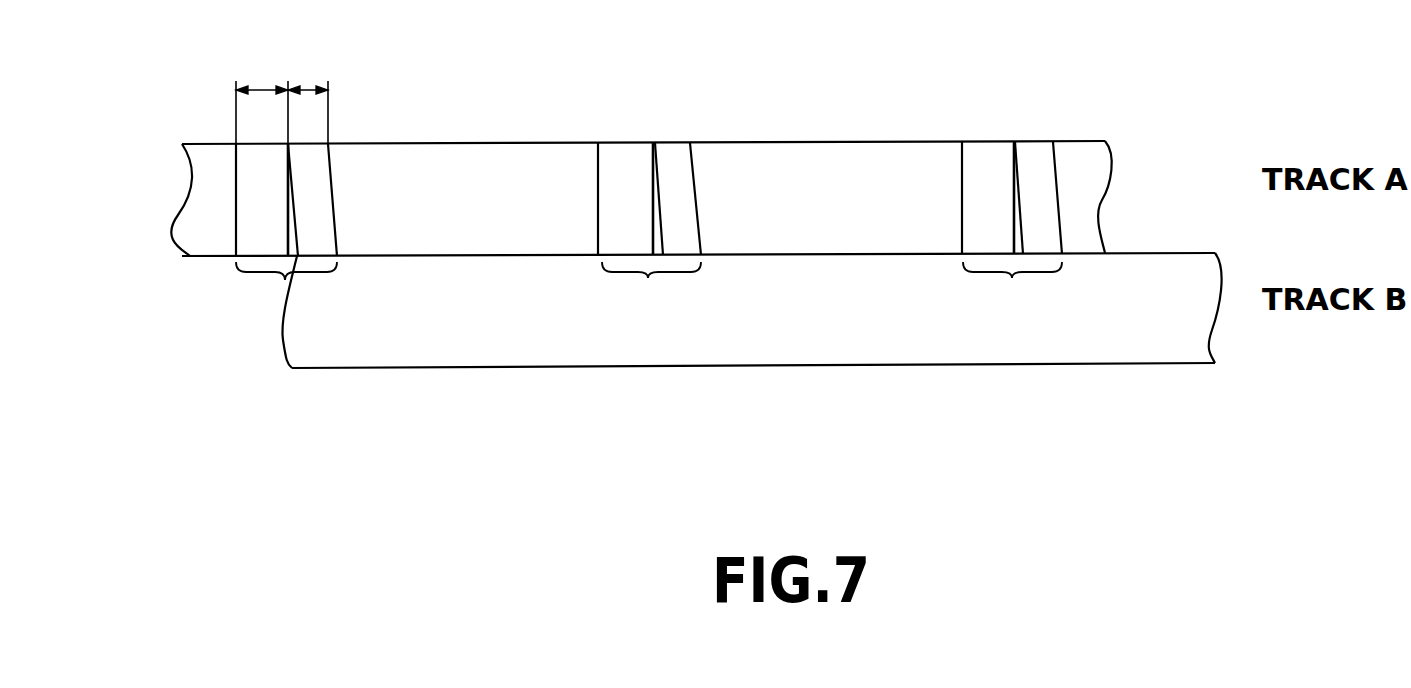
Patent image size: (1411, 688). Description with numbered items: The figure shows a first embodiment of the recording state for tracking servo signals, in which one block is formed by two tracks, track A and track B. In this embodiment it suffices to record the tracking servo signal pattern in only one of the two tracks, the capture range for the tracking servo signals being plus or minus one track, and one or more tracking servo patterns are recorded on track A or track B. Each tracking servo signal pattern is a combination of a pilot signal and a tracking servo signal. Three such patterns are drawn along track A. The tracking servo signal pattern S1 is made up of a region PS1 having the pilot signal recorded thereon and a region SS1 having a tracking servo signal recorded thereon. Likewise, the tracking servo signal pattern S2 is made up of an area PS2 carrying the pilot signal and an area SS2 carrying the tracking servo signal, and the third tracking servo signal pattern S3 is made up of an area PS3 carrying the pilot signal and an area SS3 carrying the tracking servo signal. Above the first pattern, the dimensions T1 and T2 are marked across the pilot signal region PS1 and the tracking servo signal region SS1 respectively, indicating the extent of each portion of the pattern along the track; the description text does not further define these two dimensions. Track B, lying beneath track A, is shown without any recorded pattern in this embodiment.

The region having the pilot signal recorded thereon PS1 is at (257, 214).
The region having a tracking servo signal recorded thereon SS1 is at (320, 188).
The area having the pilot signal recorded thereon PS2 is at (623, 163).
The area having a tracking servo signal recorded thereon SS2 is at (670, 163).
The area having the pilot signal recorded thereon PS3 is at (987, 163).
The area having a tracking servo signal recorded thereon SS3 is at (1032, 160).
The tracking servo signal pattern S1 is at (286, 289).
The tracking servo signal pattern S2 is at (651, 288).
The tracking servo signal pattern S3 is at (1012, 288).
The time/width T1 of preamble sector T1 is at (262, 98).
The time/width T2 of servo sector T2 is at (308, 98).